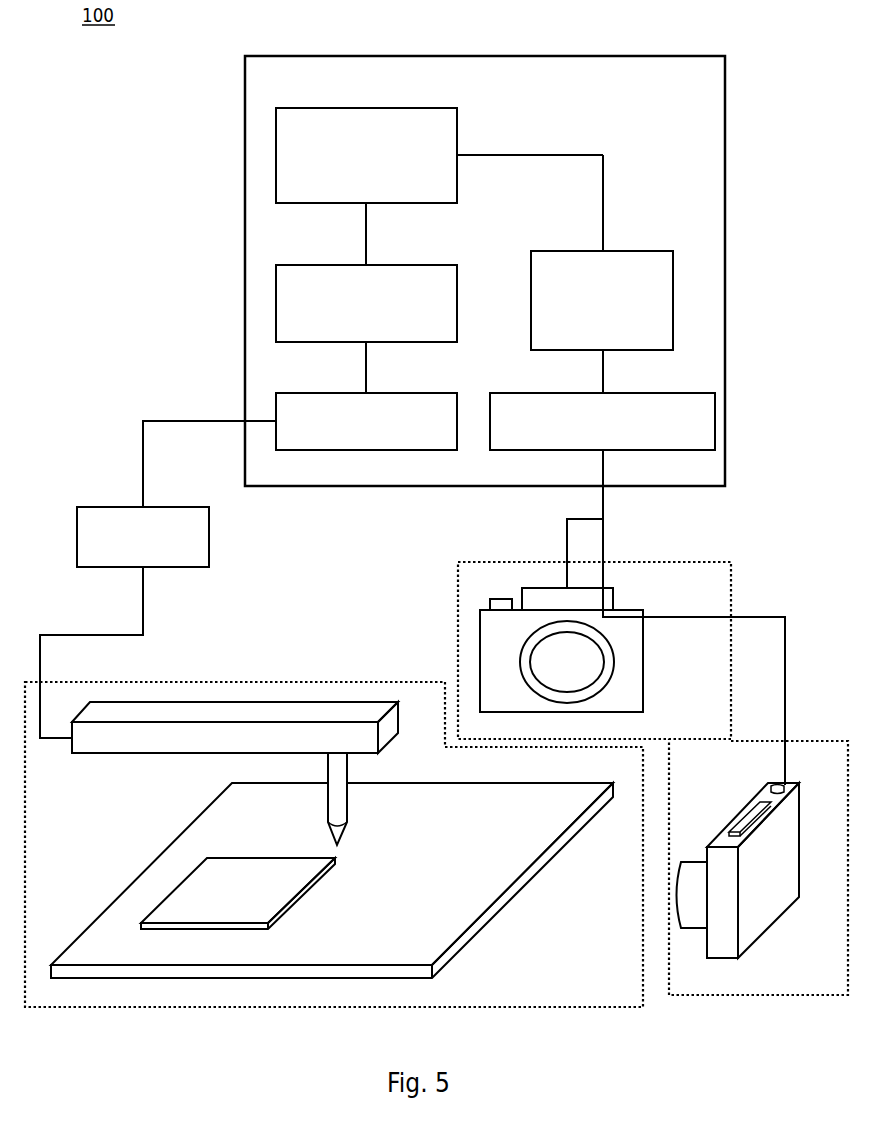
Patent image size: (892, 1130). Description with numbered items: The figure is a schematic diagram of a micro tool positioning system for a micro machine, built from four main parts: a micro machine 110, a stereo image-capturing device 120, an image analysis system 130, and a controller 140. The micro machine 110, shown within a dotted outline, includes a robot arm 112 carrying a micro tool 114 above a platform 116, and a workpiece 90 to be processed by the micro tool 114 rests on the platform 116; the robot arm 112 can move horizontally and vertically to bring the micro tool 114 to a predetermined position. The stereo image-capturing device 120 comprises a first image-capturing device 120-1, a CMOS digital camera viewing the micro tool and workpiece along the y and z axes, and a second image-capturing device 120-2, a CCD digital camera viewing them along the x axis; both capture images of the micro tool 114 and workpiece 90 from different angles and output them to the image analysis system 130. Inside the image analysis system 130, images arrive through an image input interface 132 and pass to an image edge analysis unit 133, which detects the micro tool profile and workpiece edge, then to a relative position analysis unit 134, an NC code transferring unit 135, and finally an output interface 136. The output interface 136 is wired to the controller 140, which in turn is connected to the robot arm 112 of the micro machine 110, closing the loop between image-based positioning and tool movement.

The image analysis system 130 is at (715, 84).
The relative position analysis unit 134 is at (438, 120).
The NC code transferring unit 135 is at (443, 272).
The output interface 136 is at (433, 398).
The image edge analysis unit 133 is at (657, 258).
The image input interface 132 is at (660, 405).
The controller 140 is at (156, 514).
The micro machine 110 is at (581, 920).
The robot arm 112 is at (128, 747).
The micro tool 114 is at (326, 790).
The platform 116 is at (462, 929).
The workpiece 90 is at (291, 893).
The stereo image-capturing device 120 is at (721, 781).
The first image-capturing device 120-1 is at (755, 930).
The second image-capturing device 120-2 is at (632, 688).